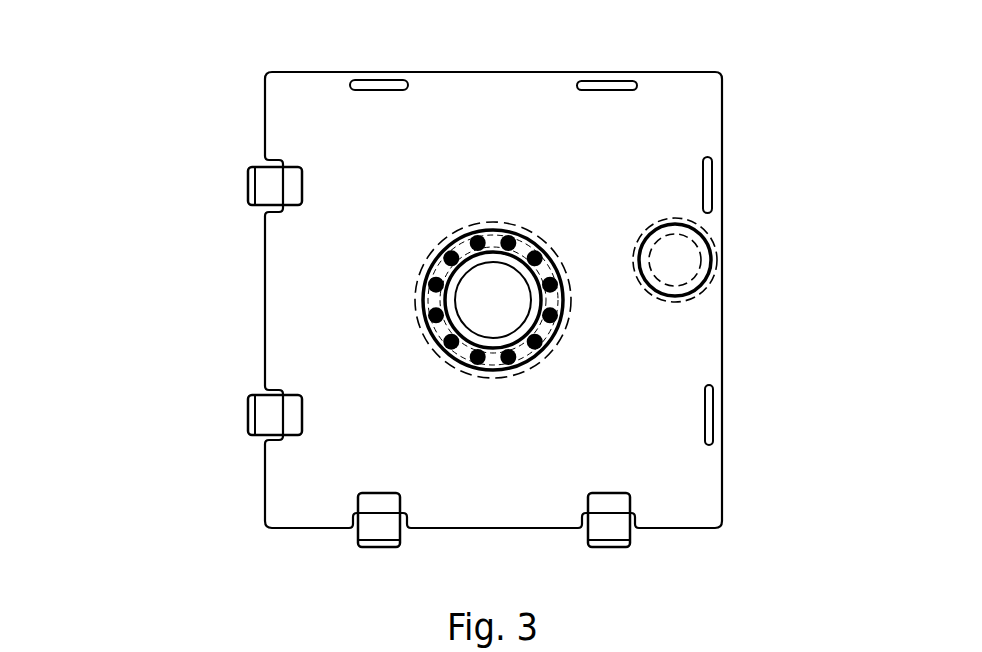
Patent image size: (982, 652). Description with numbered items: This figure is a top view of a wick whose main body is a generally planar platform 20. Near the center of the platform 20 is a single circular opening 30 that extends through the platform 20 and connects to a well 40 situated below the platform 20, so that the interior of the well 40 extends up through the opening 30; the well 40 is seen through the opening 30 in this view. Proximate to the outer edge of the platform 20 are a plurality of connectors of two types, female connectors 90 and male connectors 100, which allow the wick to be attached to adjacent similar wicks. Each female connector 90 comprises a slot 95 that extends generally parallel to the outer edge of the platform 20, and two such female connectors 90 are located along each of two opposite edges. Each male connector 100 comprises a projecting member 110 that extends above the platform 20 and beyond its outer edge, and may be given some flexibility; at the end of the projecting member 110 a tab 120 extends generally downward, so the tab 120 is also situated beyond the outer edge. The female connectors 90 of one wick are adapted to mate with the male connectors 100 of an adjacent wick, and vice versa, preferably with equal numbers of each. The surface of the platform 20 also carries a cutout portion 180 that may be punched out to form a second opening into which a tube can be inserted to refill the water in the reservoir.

The platform 20 is at (687, 495).
The opening 30 is at (510, 226).
The well 40 is at (509, 308).
The female connector 90 is at (753, 417).
The slot 95 is at (713, 183).
The male connector 100 is at (225, 420).
The projecting member 110 is at (272, 188).
The tab 120 is at (247, 193).
The cutout portion 180 is at (680, 259).